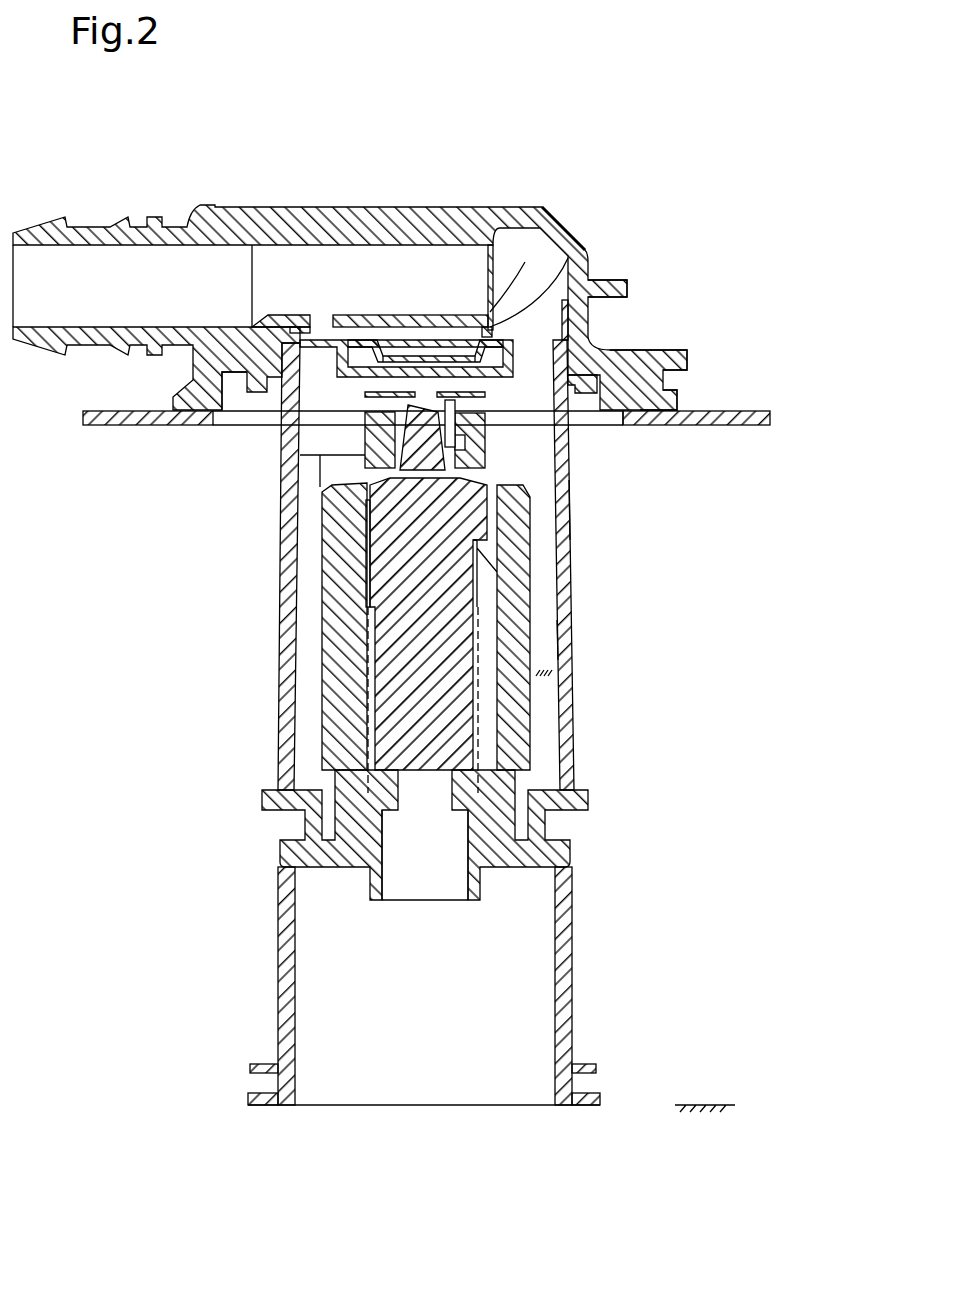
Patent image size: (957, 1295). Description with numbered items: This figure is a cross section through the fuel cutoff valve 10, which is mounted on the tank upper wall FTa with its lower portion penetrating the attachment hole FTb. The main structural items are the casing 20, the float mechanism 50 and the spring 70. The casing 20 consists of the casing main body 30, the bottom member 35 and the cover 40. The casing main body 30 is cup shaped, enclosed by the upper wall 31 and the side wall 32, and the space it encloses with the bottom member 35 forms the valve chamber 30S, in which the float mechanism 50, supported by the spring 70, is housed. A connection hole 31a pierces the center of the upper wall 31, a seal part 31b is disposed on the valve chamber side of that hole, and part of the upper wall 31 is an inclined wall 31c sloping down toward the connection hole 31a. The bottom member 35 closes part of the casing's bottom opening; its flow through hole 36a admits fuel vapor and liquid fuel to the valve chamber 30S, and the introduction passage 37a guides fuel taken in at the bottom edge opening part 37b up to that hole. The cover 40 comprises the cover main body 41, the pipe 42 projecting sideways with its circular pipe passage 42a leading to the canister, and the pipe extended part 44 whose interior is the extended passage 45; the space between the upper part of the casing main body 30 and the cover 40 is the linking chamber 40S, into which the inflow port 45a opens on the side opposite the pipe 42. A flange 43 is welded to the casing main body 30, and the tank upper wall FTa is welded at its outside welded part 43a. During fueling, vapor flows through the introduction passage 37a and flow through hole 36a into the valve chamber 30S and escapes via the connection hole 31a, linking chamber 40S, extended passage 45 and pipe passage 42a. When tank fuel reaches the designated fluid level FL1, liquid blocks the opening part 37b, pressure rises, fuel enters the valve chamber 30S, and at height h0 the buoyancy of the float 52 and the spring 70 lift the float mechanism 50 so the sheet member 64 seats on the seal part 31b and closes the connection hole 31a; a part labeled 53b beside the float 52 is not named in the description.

The fuel cutoff valve 10 is at (618, 167).
The casing 20 is at (182, 563).
The casing main body 30 is at (282, 608).
The valve chamber 30S is at (547, 505).
The upper wall 31 is at (335, 320).
The connection hole 31a is at (400, 348).
The seal part 31b is at (457, 353).
The inclined wall 31c is at (362, 340).
The side wall 32 is at (548, 642).
The bottom member 35 is at (262, 797).
The flow through hole 36a is at (421, 795).
The introduction passage 37a is at (446, 994).
The bottom edge opening part 37b is at (462, 1107).
The cover 40 is at (236, 412).
The linking chamber 40S is at (543, 206).
The cover main body 41 is at (608, 348).
The pipe 42 is at (95, 215).
The pipe passage 42a is at (183, 301).
The flange 43 is at (640, 349).
The outside welded part 43a is at (677, 393).
The pipe extended part 44 is at (558, 231).
The extended passage 45 is at (347, 258).
The inflow port 45a is at (515, 258).
The float mechanism 50 is at (538, 587).
The float 52 is at (530, 602).
The pump terminal plate 53b is at (485, 708).
The sheet member 64 is at (590, 258).
The spring 70 is at (485, 748).
The designated fluid level FL1 is at (705, 1091).
The tank upper wall FTa is at (727, 432).
The attachment hole FTb is at (621, 427).
The height h0 is at (545, 670).